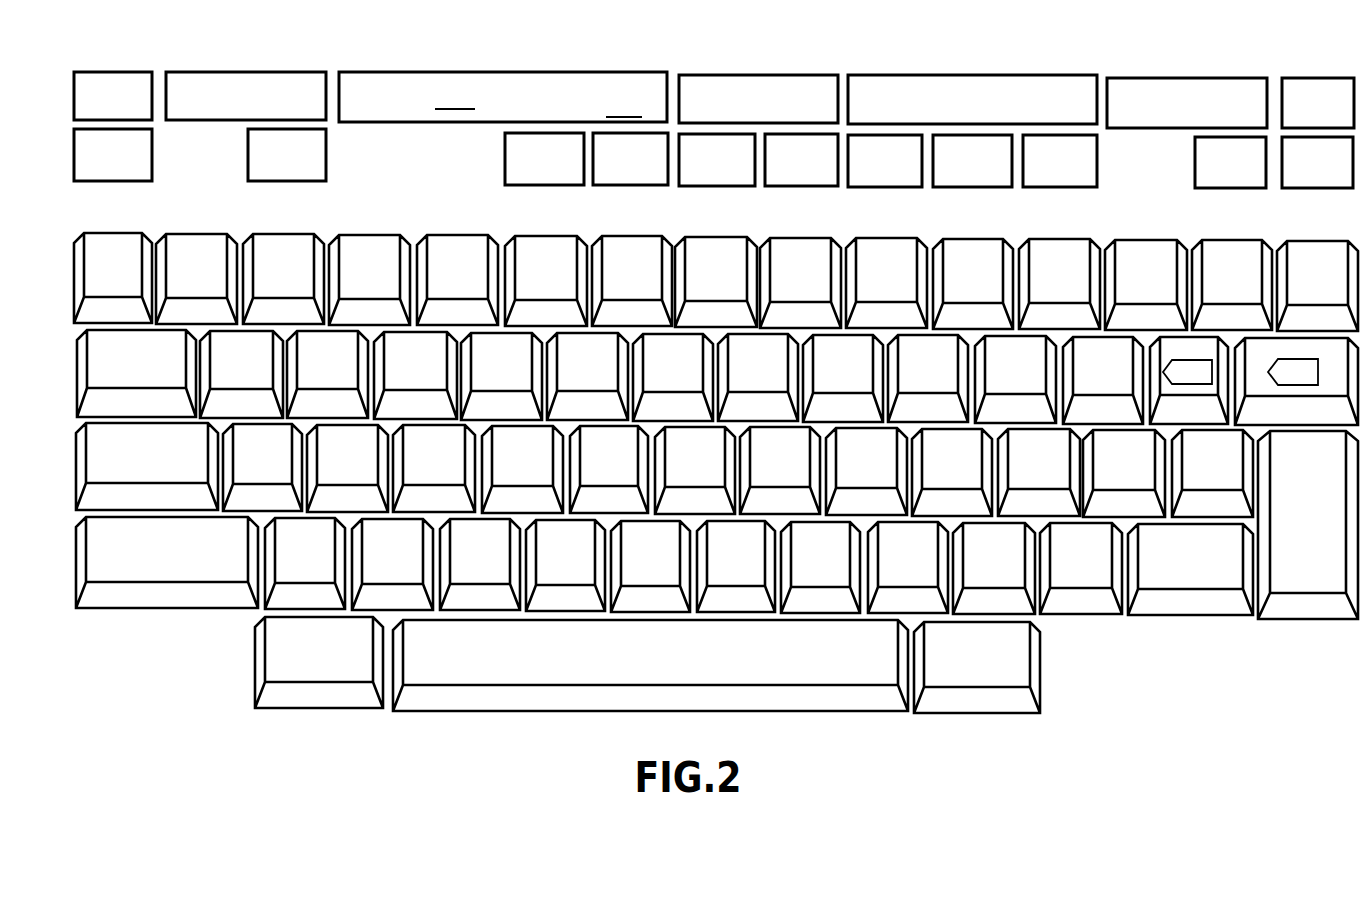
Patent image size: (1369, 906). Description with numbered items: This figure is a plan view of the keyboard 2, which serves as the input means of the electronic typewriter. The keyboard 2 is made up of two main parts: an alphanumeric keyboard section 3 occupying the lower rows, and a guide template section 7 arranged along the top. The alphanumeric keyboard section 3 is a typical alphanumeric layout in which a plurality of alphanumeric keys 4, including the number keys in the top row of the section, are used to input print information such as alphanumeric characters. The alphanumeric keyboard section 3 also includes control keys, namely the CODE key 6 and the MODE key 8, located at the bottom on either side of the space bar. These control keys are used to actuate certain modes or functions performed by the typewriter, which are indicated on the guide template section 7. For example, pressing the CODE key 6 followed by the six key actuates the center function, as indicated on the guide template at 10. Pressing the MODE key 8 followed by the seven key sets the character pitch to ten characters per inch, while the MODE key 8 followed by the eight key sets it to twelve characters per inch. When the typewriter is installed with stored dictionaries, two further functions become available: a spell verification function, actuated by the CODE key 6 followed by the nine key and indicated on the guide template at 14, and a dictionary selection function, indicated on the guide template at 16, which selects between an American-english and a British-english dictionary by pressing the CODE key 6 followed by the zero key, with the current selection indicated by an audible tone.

The keyboard 2 is at (688, 398).
The alphanumeric keyboard section 3 is at (688, 477).
The alphanumeric keys 4 is at (1018, 236).
The CODE key 6 is at (315, 710).
The guide template section 7 is at (692, 109).
The MODE key 8 is at (963, 714).
The center function indication 10 is at (658, 140).
The spell verification function indication 14 is at (860, 145).
The dictionary selection function indication 16 is at (943, 145).